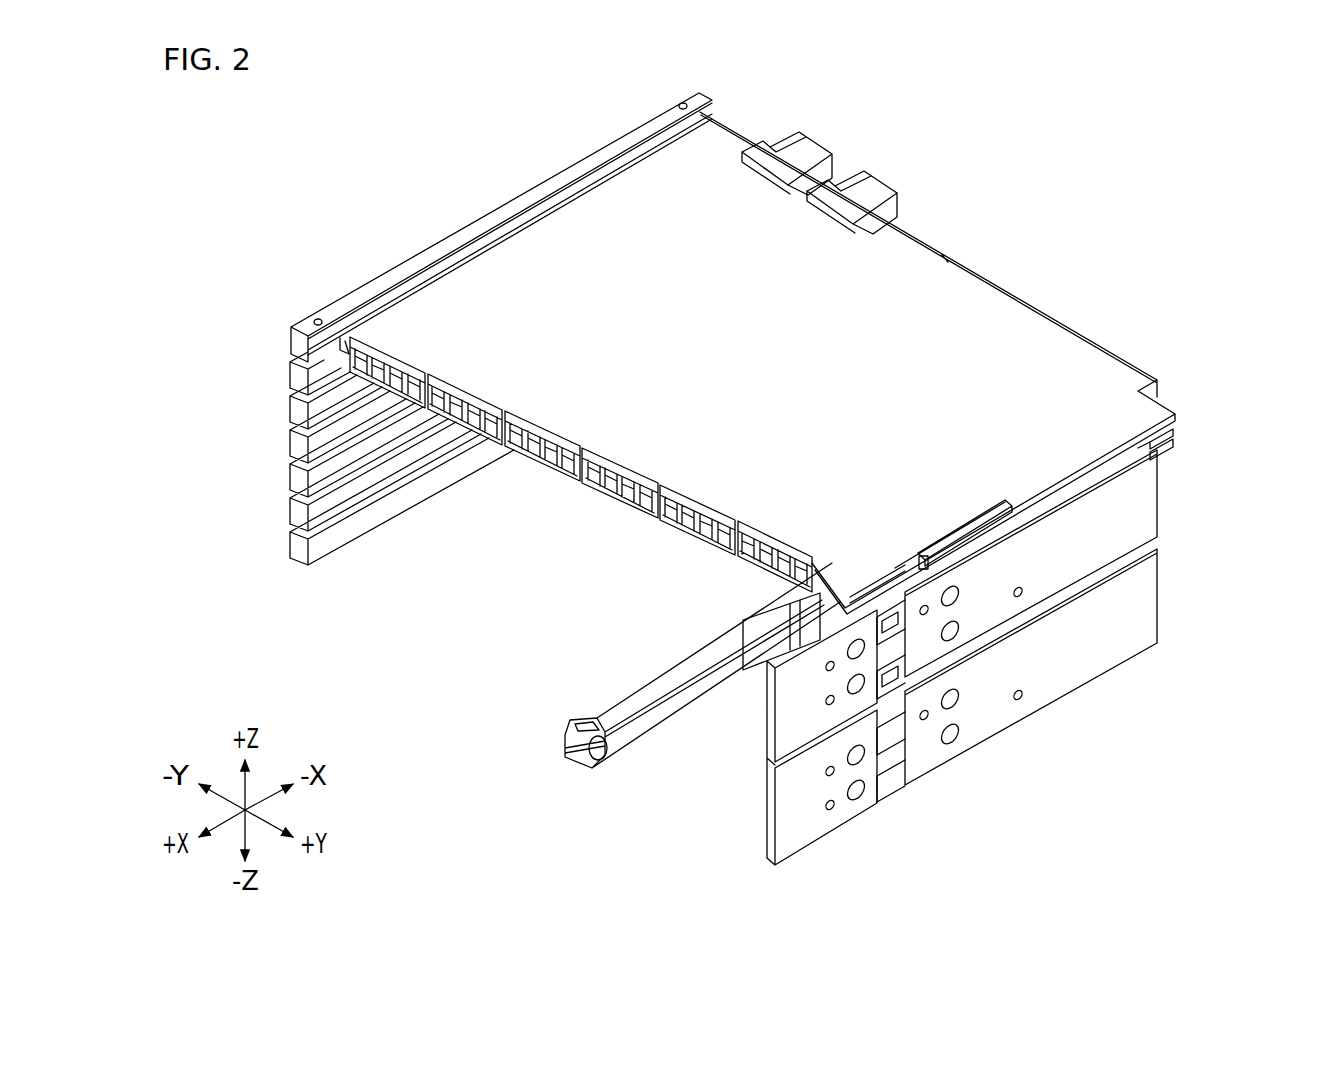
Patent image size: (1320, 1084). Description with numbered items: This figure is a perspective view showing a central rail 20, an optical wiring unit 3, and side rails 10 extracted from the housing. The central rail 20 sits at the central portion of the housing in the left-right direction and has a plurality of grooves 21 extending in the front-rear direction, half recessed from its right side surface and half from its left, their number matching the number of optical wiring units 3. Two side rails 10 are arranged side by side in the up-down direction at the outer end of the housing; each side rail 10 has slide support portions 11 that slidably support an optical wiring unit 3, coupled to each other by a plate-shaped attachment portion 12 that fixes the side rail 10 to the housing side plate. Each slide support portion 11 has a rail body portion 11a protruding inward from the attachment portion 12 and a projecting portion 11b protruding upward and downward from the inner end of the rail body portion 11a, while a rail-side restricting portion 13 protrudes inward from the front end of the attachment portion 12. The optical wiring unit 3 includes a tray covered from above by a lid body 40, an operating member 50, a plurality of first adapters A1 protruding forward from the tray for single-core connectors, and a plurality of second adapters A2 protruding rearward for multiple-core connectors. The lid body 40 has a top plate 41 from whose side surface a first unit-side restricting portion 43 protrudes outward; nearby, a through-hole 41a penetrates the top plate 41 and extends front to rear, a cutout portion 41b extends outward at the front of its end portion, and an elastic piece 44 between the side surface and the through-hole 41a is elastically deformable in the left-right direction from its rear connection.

The optical wiring unit 3 is at (581, 464).
The side rail 10 is at (963, 704).
The slide support portion 11 is at (833, 779).
The rail body portion 11a is at (800, 640).
The projecting portion 11b is at (848, 615).
The attachment portion 12 is at (977, 617).
The rail-side restricting portion 13 is at (766, 662).
The central rail 20 is at (291, 322).
The groove 21 is at (340, 347).
The lid body 40 is at (995, 283).
The top plate 41 is at (890, 268).
The through-hole 41a is at (1020, 520).
The cutout portion 41b is at (898, 549).
The first unit-side restricting portion 43 is at (987, 560).
The elastic piece 44 is at (1023, 560).
The operating member 50 is at (562, 721).
The first adapter A1 is at (657, 512).
The second adapter A2 is at (805, 148).